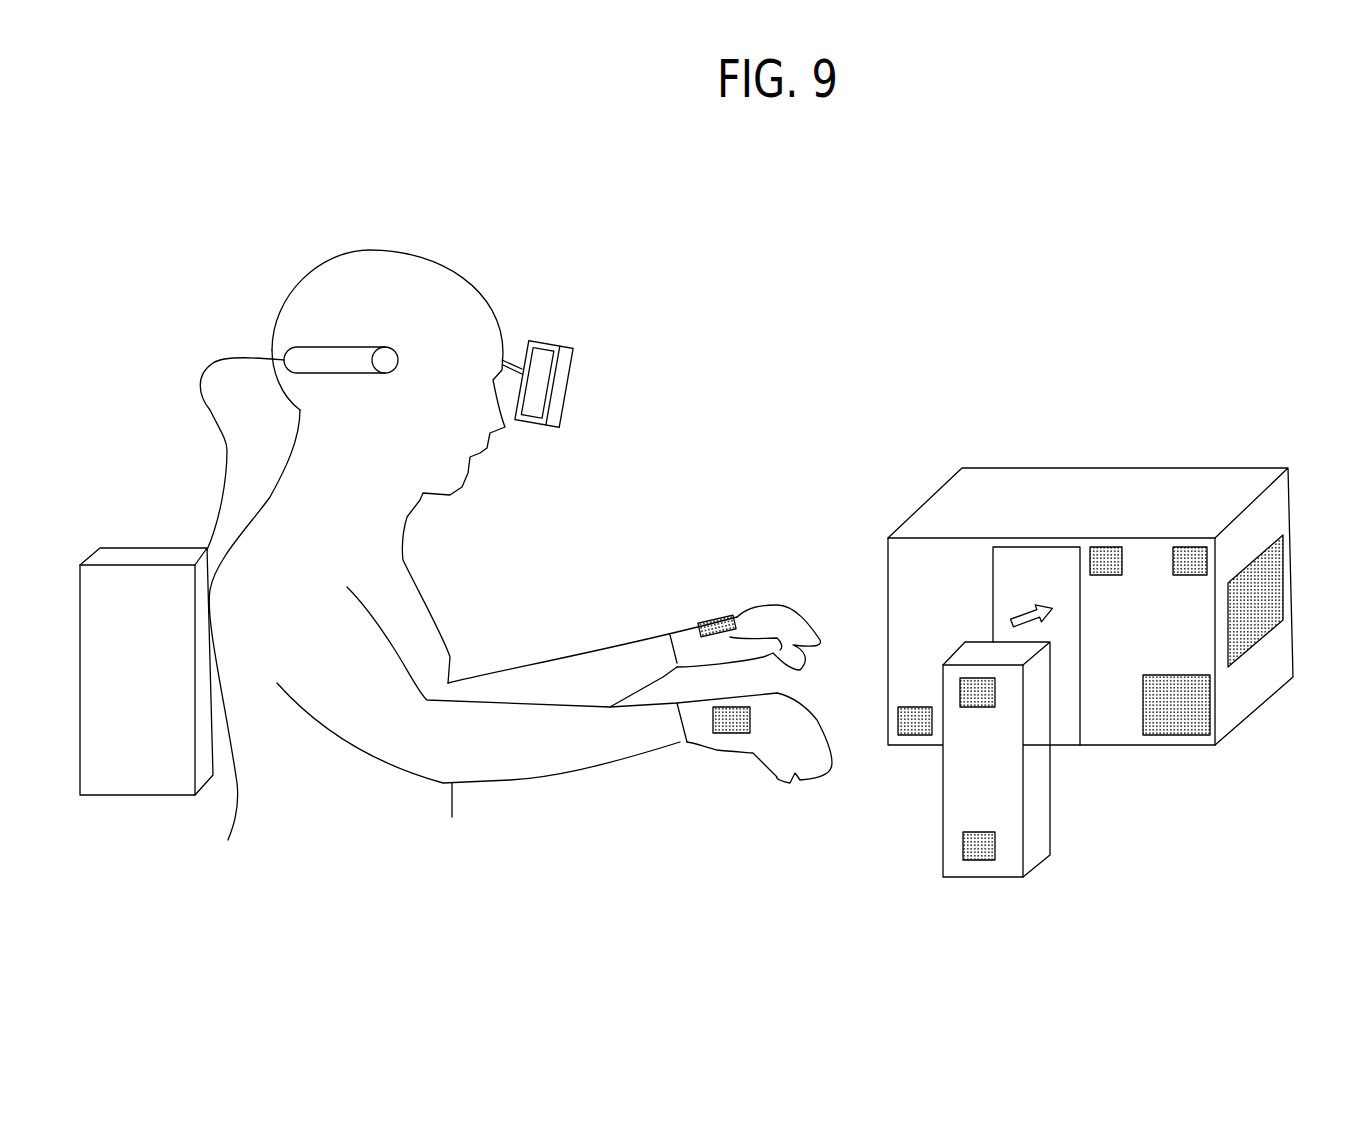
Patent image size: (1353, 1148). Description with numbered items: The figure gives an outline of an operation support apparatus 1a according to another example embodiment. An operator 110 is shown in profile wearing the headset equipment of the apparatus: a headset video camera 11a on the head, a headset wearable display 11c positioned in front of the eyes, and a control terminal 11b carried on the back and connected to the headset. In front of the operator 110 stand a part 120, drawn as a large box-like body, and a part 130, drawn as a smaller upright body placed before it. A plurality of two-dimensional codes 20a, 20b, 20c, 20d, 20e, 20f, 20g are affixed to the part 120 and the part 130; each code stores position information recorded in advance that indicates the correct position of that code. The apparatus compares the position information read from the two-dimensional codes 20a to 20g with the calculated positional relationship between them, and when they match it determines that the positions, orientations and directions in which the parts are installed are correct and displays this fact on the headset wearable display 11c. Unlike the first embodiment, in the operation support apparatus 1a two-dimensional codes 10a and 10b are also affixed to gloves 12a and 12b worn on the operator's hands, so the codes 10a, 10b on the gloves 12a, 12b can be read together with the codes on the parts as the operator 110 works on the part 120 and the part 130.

The operation support apparatus 1a is at (486, 241).
The operator 110 is at (370, 249).
The headset video camera 11a is at (328, 347).
The control terminal 11b is at (135, 797).
The headset wearable display 11c is at (552, 340).
The two-dimensional code 10a is at (727, 734).
The two-dimensional code 10b is at (713, 614).
The glove 12a is at (777, 760).
The glove 12b is at (745, 612).
The part 120 is at (982, 478).
The part 130 is at (950, 867).
The two-dimensional code 20a is at (1098, 547).
The two-dimensional code 20b is at (1195, 547).
The two-dimensional code 20c is at (917, 705).
The two-dimensional code 20d is at (977, 707).
The two-dimensional code 20e is at (975, 861).
The two-dimensional code 20f is at (1255, 647).
The two-dimensional code 20g is at (1180, 736).